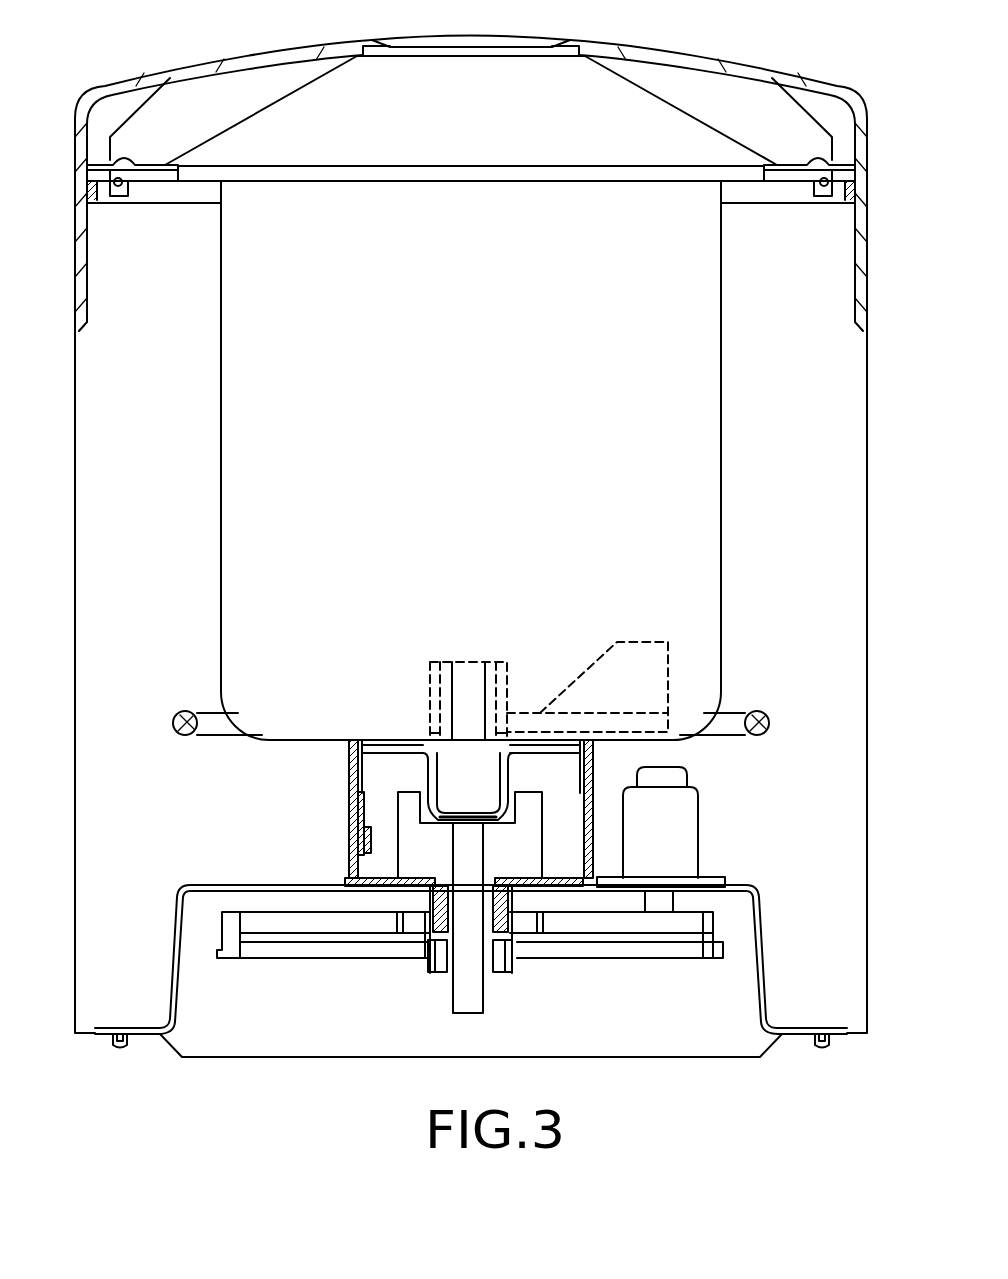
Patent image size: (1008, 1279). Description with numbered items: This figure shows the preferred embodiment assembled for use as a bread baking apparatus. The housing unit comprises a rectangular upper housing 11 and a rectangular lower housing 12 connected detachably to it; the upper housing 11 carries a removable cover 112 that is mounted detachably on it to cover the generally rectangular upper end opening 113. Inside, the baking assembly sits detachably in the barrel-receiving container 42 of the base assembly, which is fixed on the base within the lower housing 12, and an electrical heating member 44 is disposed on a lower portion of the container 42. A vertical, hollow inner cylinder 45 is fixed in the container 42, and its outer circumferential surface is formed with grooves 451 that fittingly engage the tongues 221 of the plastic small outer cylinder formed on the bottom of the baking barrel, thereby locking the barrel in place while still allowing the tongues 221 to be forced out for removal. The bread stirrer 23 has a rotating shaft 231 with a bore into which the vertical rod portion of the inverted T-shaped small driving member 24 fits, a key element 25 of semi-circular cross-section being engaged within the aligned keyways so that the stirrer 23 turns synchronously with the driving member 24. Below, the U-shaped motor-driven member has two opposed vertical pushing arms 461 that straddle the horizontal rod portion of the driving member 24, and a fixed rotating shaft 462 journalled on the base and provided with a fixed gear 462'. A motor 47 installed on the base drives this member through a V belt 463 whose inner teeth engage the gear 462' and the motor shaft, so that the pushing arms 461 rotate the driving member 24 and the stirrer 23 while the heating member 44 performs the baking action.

The upper housing 11 is at (867, 213).
The removable cover 112 is at (612, 50).
The upper end opening 113 is at (822, 205).
The lower housing 12 is at (855, 462).
The barrel-receiving container 42 is at (209, 390).
The electrical heating member 44 is at (178, 712).
The bread stirrer 23 is at (620, 640).
The small driving member 24 is at (505, 785).
The key element 25 is at (465, 663).
The rotating shaft 231 is at (428, 683).
The inner cylinder 45 is at (347, 847).
The grooves 451 is at (348, 834).
The tongues 221 is at (348, 840).
The pushing arms 461 is at (408, 802).
The fixed rotating shaft 462 is at (410, 929).
The fixed gear 462' is at (470, 962).
The V belt 463 is at (718, 938).
The motor 47 is at (685, 803).